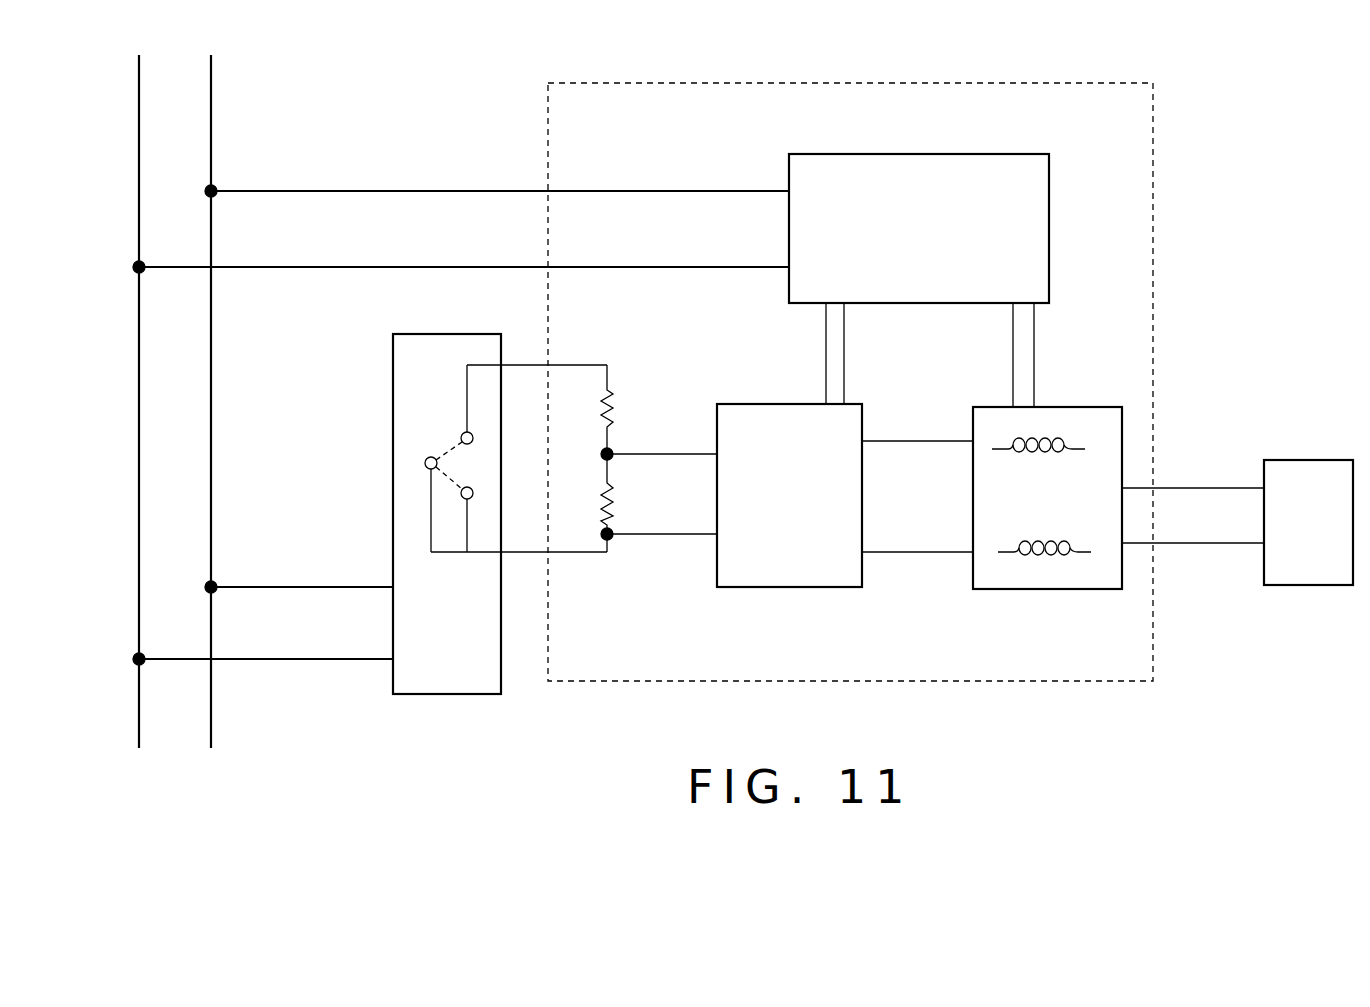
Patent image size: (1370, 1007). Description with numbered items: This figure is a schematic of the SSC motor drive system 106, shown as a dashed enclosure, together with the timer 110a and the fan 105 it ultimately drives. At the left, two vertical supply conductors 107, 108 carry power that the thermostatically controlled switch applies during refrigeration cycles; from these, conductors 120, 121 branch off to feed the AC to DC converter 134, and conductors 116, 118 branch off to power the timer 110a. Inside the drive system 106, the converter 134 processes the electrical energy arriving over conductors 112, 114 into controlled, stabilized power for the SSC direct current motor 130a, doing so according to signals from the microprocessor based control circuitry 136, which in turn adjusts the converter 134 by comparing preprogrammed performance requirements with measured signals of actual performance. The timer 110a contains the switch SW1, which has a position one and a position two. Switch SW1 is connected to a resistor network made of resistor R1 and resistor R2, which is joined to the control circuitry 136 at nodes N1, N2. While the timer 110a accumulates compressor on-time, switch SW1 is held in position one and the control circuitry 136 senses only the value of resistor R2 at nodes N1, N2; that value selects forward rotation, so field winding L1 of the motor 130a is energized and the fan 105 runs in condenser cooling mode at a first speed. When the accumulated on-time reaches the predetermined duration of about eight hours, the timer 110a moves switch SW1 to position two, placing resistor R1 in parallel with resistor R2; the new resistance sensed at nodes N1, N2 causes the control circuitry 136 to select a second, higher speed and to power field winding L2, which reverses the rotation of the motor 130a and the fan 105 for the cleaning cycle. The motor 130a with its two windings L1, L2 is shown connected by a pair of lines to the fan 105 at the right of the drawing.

The fan 105 is at (1282, 460).
The SSC motor drive system 106 is at (797, 681).
The conductor 107 is at (211, 98).
The conductor 108 is at (139, 110).
The timer 110a is at (420, 694).
The conductor 112 is at (572, 365).
The conductor 114 is at (572, 552).
The conductor 116 is at (255, 587).
The conductor 118 is at (260, 659).
The conductor 120 is at (383, 191).
The conductor 121 is at (387, 267).
The SSC direct current motor 130a is at (1118, 477).
The AC to DC converter 134 is at (957, 154).
The control circuitry 136 is at (785, 404).
The switch SW1 is at (417, 458).
The resistor R1 is at (625, 409).
The resistor R2 is at (626, 503).
The node N1 is at (641, 454).
The node N2 is at (641, 534).
The field winding L1 is at (1038, 432).
The field winding L2 is at (1044, 562).